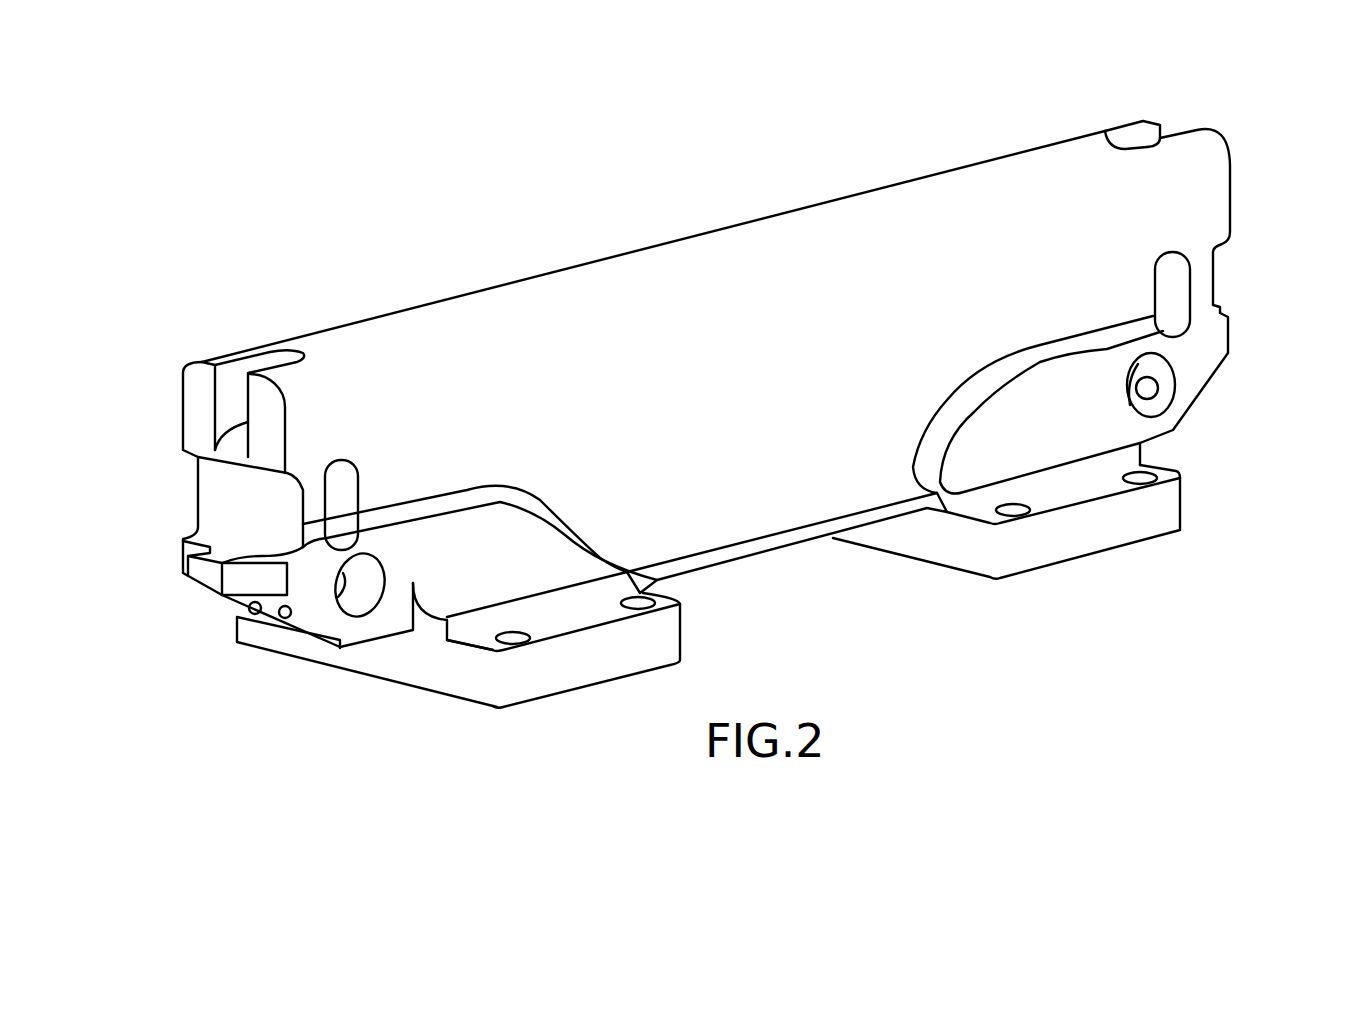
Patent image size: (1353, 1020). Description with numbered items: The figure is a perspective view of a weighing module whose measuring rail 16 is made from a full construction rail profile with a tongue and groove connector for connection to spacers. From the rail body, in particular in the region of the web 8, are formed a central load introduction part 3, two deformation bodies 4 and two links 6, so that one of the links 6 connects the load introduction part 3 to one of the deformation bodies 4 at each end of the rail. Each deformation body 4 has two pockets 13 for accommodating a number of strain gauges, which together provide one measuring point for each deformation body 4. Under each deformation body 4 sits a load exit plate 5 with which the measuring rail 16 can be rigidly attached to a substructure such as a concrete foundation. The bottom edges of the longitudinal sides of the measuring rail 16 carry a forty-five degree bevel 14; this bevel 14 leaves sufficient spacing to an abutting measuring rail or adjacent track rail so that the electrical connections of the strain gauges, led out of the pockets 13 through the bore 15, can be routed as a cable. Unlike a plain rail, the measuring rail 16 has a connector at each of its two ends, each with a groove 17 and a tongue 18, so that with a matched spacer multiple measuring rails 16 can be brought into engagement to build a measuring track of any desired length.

The measuring rail 16 is at (695, 193).
The load introduction part 3 is at (555, 340).
The deformation body 4 is at (1067, 428).
The load exit plate 5 is at (1020, 547).
The link 6 is at (320, 523).
The web 8 is at (731, 497).
The pocket 13 is at (367, 597).
The bevel 14 is at (1216, 376).
The bore 15 is at (285, 617).
The groove 17 is at (230, 403).
The tongue 18 is at (207, 580).